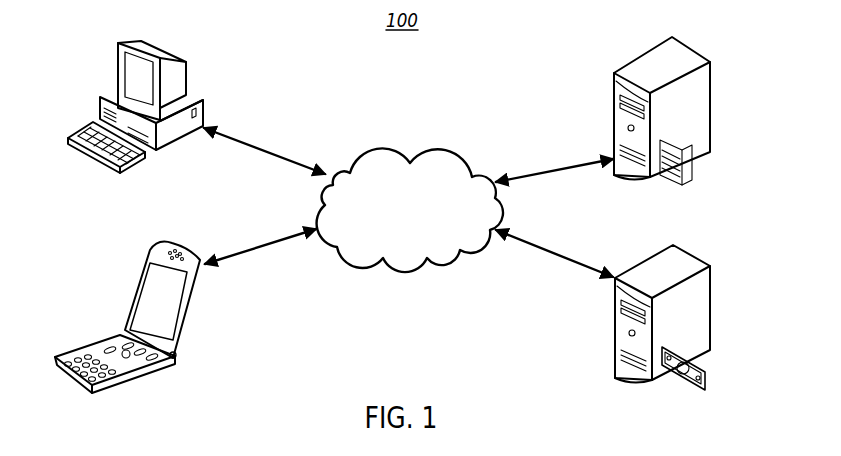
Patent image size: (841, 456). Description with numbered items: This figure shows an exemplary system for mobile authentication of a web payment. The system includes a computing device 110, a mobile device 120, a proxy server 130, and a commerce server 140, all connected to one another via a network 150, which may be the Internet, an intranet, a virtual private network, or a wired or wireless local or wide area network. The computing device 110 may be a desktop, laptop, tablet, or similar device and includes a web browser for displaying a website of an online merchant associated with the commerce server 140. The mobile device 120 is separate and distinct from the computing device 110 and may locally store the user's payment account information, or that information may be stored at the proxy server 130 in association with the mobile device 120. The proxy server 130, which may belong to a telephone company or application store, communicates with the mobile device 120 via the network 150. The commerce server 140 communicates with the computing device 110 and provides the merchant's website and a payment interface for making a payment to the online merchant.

The computing device 110 is at (107, 107).
The mobile device 120 is at (127, 342).
The proxy server 130 is at (697, 111).
The commerce server 140 is at (714, 317).
The network 150 is at (410, 210).